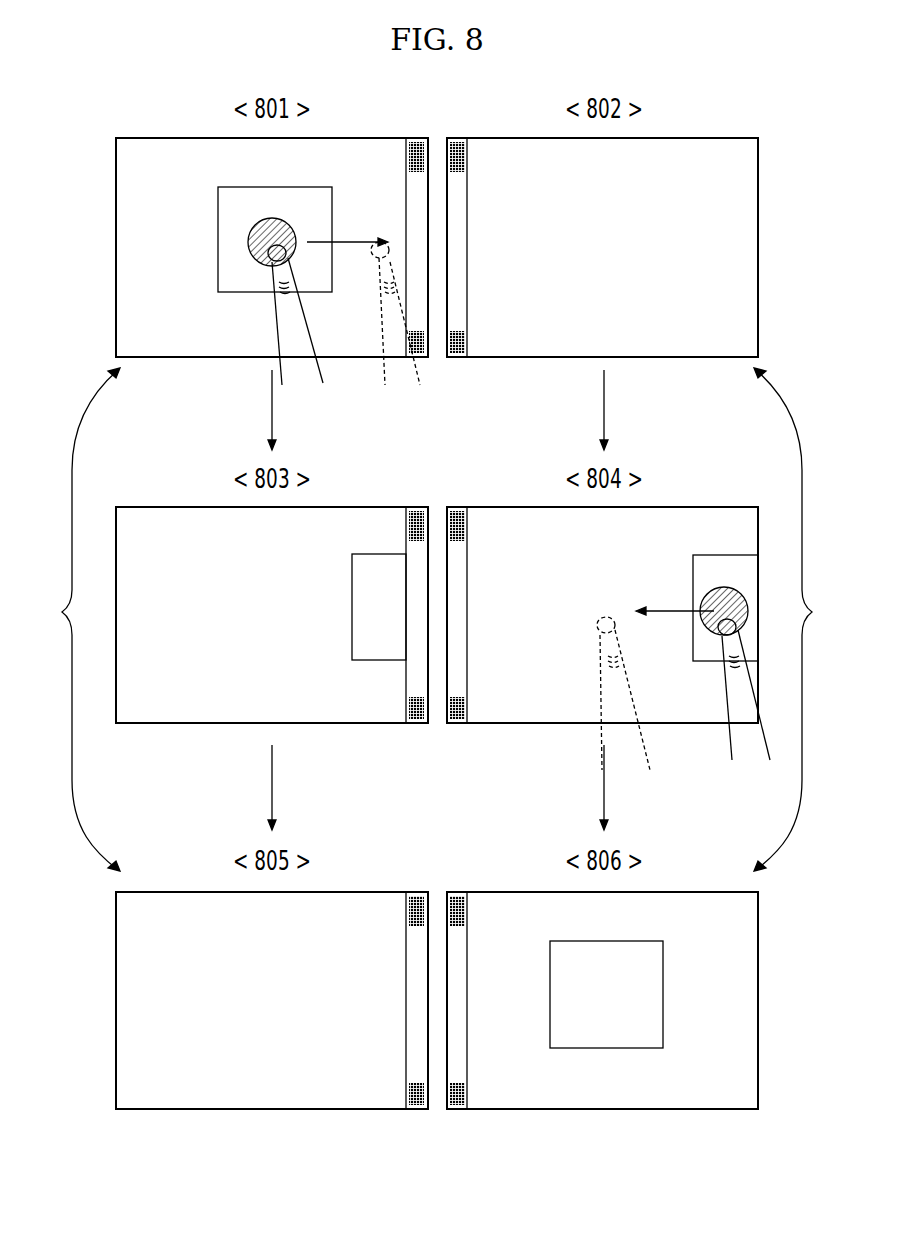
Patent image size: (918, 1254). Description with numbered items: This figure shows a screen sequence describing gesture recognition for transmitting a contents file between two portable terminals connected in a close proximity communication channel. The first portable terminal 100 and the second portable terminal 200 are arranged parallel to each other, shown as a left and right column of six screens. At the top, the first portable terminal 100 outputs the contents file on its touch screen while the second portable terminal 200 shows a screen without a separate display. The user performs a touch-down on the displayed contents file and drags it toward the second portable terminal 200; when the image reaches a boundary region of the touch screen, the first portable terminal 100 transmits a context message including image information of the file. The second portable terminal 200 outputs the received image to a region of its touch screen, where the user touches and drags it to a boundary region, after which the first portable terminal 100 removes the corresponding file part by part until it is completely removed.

The first portable terminal 100 is at (113, 606).
The second portable terminal 200 is at (761, 606).